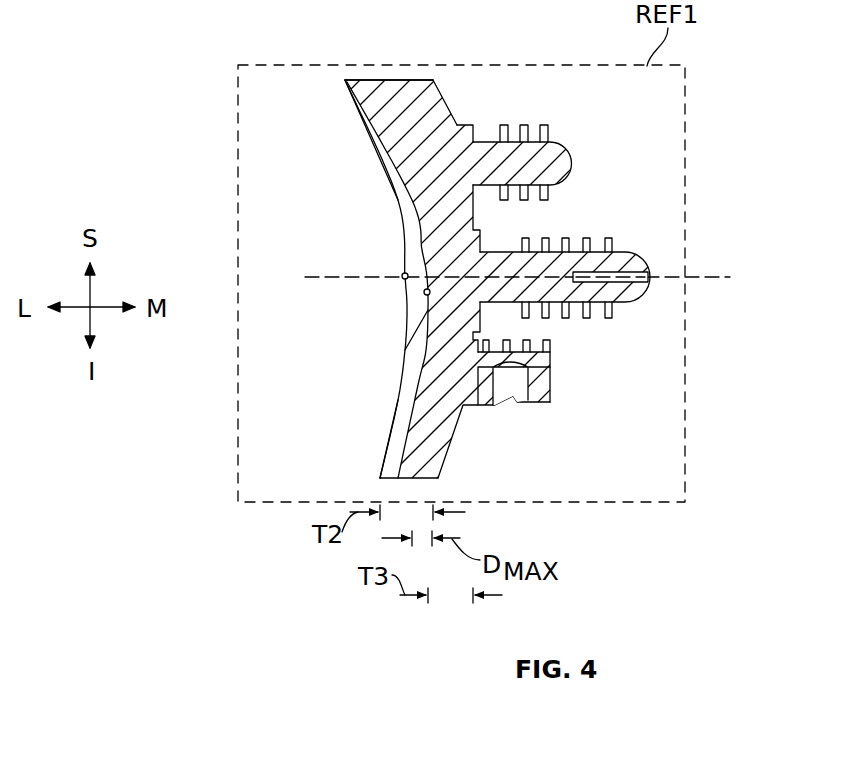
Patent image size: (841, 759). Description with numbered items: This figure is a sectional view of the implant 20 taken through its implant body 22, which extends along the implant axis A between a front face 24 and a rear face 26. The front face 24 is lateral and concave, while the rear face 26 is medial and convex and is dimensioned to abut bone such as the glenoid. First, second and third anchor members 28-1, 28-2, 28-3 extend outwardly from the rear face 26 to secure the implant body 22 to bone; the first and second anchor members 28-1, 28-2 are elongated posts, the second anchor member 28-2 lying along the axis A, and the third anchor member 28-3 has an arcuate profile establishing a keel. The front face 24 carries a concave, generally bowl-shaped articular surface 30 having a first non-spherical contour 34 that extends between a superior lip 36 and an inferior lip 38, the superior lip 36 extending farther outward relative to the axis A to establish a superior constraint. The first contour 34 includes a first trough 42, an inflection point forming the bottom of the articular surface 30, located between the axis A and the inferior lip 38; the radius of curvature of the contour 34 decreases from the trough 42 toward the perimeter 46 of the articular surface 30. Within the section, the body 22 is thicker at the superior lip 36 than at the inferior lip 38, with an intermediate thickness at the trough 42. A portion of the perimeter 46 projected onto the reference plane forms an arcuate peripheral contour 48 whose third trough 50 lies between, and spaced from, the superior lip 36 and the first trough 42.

The implant 20 is at (265, 38).
The implant body 22 is at (390, 80).
The front face 24 is at (398, 173).
The rear face 26 is at (452, 110).
The first anchor member 28-1 is at (558, 143).
The second anchor member 28-2 is at (622, 303).
The third anchor member 28-3 is at (543, 404).
The articular surface 30 is at (371, 140).
The first non-spherical contour 34 is at (403, 210).
The superior lip 36 is at (412, 80).
The inferior lip 38 is at (424, 478).
The first trough 42 is at (424, 292).
The perimeter of the articular surface 46 is at (393, 437).
The arcuate peripheral contour 48 is at (409, 397).
The third trough 50 is at (403, 273).
The implant axis A is at (705, 277).